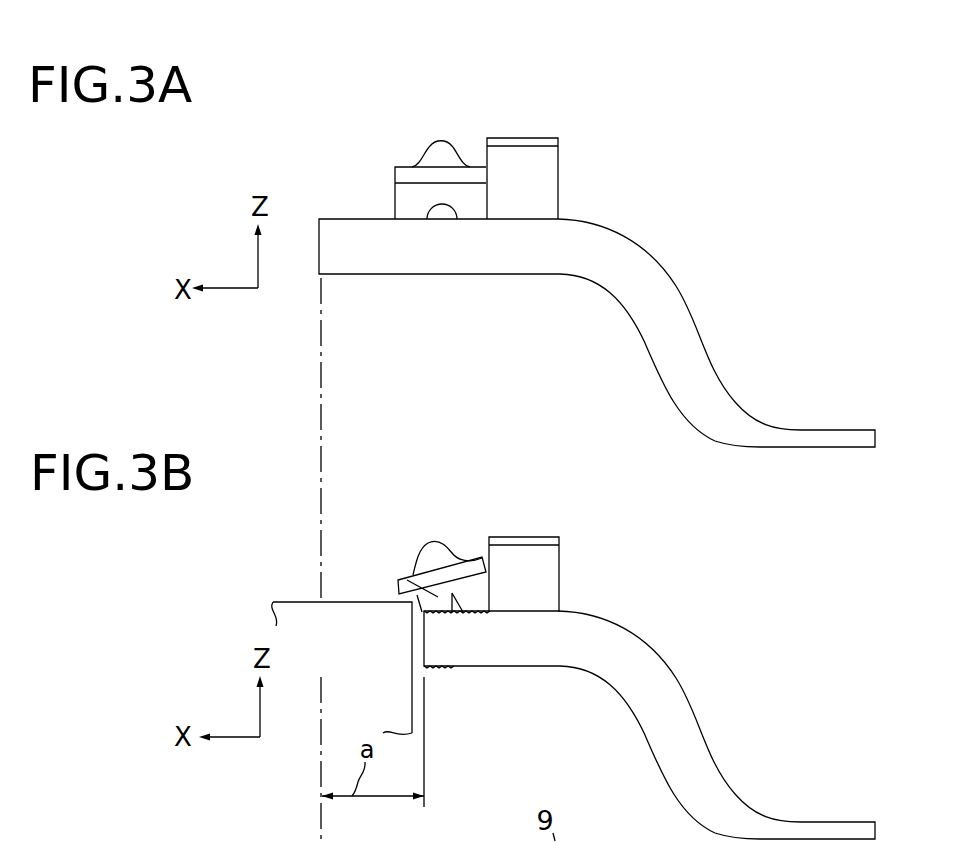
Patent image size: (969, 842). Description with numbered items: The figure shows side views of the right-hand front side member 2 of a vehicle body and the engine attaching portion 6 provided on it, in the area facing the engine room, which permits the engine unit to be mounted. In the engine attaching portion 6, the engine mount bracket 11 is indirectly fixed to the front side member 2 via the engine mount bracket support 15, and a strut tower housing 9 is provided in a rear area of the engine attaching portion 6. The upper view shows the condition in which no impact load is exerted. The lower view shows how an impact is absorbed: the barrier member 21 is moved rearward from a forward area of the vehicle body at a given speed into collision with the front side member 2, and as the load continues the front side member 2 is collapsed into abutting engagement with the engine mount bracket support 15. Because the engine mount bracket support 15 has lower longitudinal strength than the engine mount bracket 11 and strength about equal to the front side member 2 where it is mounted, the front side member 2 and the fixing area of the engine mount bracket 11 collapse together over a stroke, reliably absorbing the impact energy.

In FIG. 3A, the front side member 2 is at (678, 292).
In FIG. 3B, the front side member 2 is at (678, 684).
In FIG. 3A, the engine attaching portion 6 is at (403, 120).
In FIG. 3B, the engine attaching portion 6 is at (415, 507).
In FIG. 3A, the strut tower housing 9 is at (517, 138).
In FIG. 3B, the strut tower housing 9 is at (524, 537).
In FIG. 3A, the engine mount bracket 11 is at (425, 153).
In FIG. 3B, the engine mount bracket 11 is at (424, 545).
In FIG. 3A, the engine mount bracket support 15 is at (396, 202).
In FIG. 3B, the engine mount bracket support 15 is at (398, 586).
In FIG. 3B, the barrier member 21 is at (275, 600).